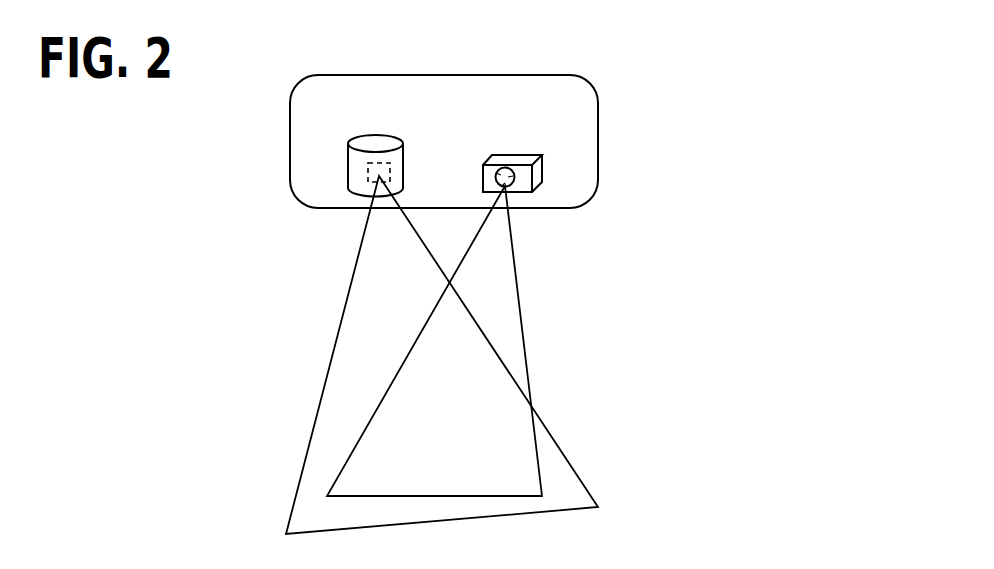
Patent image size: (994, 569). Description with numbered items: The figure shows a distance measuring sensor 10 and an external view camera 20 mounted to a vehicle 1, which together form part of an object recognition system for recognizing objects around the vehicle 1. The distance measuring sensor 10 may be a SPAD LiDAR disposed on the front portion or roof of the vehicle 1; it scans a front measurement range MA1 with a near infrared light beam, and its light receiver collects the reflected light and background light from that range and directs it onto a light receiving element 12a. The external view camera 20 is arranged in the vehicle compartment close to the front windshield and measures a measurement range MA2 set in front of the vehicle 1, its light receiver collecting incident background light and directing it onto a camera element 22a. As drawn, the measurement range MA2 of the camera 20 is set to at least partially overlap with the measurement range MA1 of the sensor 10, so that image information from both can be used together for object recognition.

The vehicle 1 is at (345, 75).
The distance measuring sensor 10 is at (348, 160).
The light receiving element 12a is at (368, 177).
The external view camera 20 is at (540, 167).
The camera element 22a is at (542, 177).
The front measurement range MA1 is at (305, 463).
The measurement range MA2 is at (538, 458).